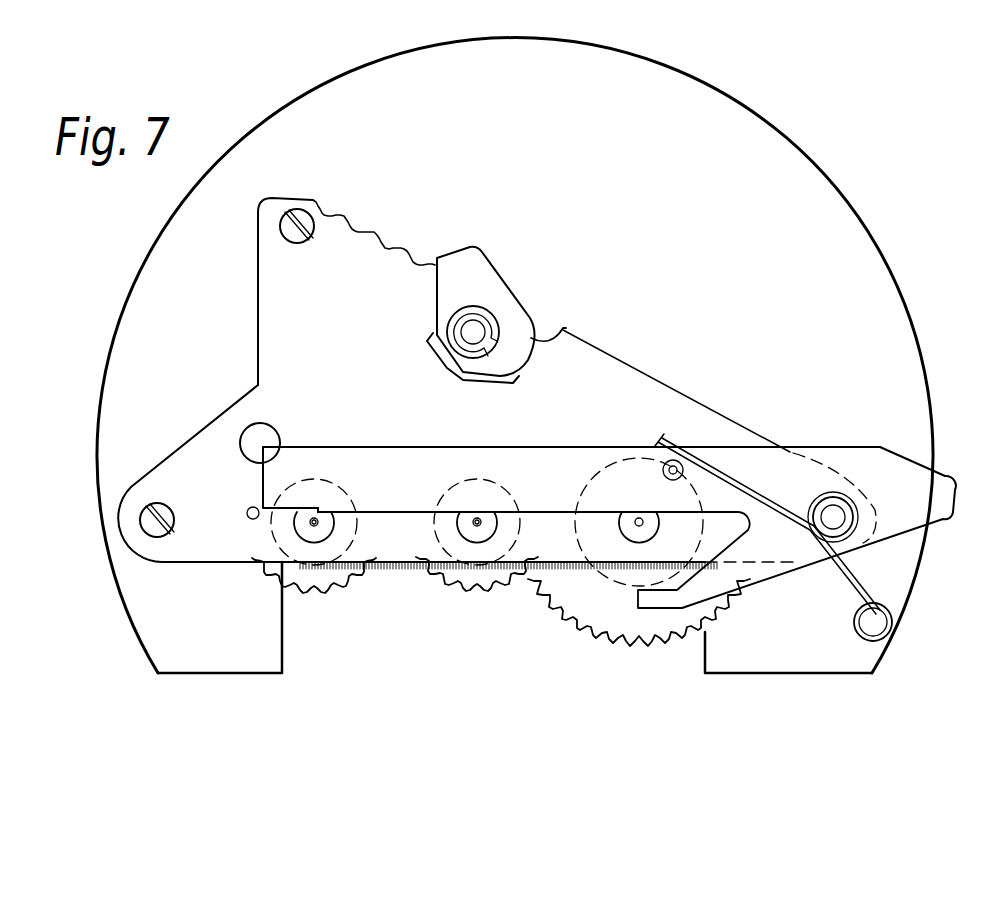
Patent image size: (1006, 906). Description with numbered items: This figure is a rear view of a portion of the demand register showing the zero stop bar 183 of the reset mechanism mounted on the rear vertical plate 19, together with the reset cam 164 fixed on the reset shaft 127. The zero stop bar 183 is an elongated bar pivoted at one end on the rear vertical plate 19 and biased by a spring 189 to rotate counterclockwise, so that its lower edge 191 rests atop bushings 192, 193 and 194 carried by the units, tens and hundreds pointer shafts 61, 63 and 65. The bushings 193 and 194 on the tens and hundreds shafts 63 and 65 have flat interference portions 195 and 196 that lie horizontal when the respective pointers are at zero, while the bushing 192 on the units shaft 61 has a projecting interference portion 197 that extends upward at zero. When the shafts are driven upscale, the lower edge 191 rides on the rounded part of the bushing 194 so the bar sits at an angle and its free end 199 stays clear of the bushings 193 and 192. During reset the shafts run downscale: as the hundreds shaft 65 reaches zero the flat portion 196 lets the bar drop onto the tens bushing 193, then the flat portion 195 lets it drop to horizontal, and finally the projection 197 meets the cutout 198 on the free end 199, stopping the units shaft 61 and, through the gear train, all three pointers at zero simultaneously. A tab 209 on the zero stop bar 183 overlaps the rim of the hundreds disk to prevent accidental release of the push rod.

The rear vertical plate 19 is at (845, 205).
The units pointer shaft 61 is at (313, 527).
The tens pointer shaft 63 is at (476, 530).
The hundreds pointer shaft 65 is at (638, 528).
The reset shaft 127 is at (484, 326).
The reset cam 164 is at (480, 281).
The zero stop bar 183 is at (983, 449).
The spring 189 is at (880, 596).
The lower edge 191 is at (398, 508).
The bushing 192 is at (325, 525).
The bushing 193 is at (480, 528).
The bushing 194 is at (613, 512).
The flat interference portion 195 is at (470, 512).
The flat interference portion 196 is at (631, 512).
The projecting interference portion 197 is at (315, 507).
The cutout 198 is at (318, 507).
The free end 199 is at (283, 466).
The tab 209 is at (636, 545).